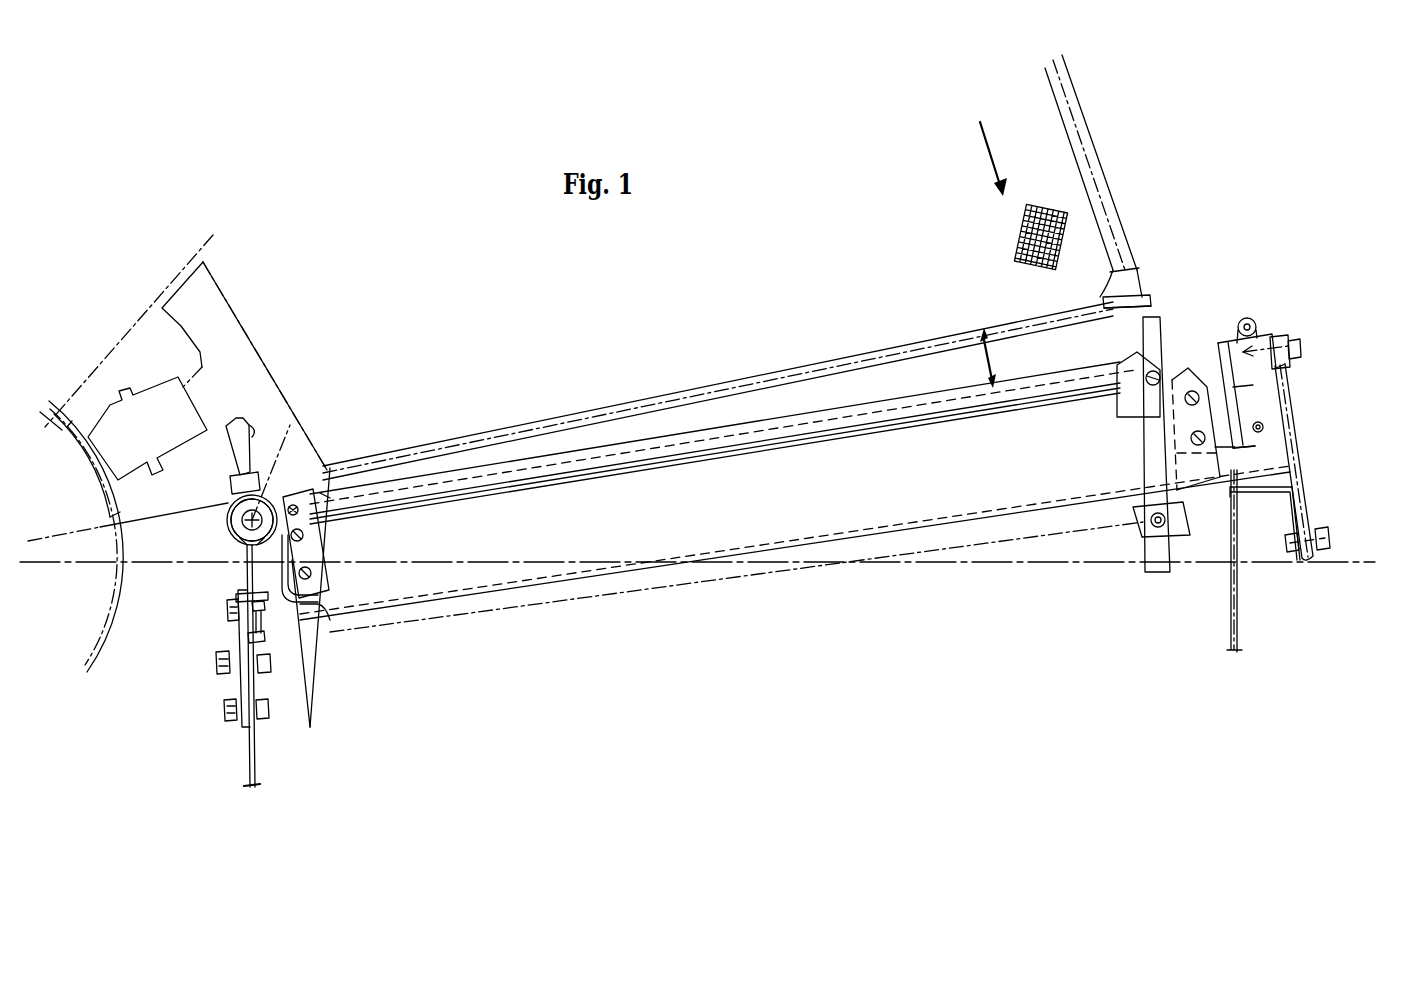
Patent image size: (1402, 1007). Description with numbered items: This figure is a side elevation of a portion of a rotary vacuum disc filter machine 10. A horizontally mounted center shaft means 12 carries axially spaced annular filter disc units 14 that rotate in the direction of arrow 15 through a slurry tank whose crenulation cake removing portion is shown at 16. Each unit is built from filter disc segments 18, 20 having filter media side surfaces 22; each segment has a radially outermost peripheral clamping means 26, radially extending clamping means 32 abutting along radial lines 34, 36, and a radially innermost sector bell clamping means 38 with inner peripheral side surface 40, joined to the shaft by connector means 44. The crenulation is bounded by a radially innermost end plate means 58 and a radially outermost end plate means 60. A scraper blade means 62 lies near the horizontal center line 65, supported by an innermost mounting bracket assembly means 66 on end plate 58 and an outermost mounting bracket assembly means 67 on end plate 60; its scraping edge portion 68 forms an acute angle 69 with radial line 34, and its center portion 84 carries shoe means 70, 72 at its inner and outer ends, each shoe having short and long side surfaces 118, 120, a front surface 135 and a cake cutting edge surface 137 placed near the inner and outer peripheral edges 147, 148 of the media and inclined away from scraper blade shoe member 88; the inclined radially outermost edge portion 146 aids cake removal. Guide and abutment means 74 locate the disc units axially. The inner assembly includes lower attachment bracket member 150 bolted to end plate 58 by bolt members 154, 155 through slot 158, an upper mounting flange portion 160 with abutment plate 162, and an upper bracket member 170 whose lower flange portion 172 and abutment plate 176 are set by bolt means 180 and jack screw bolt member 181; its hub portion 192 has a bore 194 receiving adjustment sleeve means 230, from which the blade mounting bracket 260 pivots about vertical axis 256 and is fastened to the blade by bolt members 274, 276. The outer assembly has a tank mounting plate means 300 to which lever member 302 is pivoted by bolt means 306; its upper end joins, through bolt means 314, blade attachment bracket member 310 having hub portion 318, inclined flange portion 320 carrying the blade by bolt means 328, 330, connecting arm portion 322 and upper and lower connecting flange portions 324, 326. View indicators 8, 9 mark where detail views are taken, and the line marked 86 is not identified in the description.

The view 8 direction 8 is at (1318, 430).
The section line 9- 9 is at (293, 530).
The rotary vacuum disc filter machine 10 is at (102, 384).
The center shaft means 12 is at (85, 640).
The filter disc units 14 is at (1139, 288).
The arrow 15 is at (988, 160).
The crenulation cake removing portion of the tank means 16 is at (262, 773).
The filter disc segment 18 is at (1122, 185).
The filter disc segment 20 is at (1153, 313).
The filter media side surface 22 is at (1014, 250).
The radially outermost peripheral clamping means 26 is at (1109, 145).
The radially extending clamping means 32 is at (838, 354).
The radial line 34 is at (724, 382).
The radial line 36 is at (215, 238).
The sector bell connecting and filter material clamping means 38 is at (232, 299).
The inner peripheral side surface 40 is at (235, 362).
The connector means 44 is at (140, 400).
The radially innermost end plate means 58 is at (246, 770).
The radially outermost end plate means 60 is at (1238, 578).
The scraper blade means 62 is at (782, 540).
The horizontal center line 65 is at (965, 564).
The radially innermost mounting bracket assembly means 66 is at (232, 594).
The radially outermost mounting bracket assembly means 67 is at (1298, 330).
The scraping edge portion 68 is at (886, 394).
The acute angle 69 is at (985, 362).
The cake scraping and scraper blade supporting shoe means 70 is at (340, 500).
The cake scraping and scraper blade supporting shoe means 72 is at (1146, 380).
The filter disc unit guide and abutment means 74 is at (1140, 540).
The blade center portion 84 is at (832, 540).
The lower beam upper edge 86 is at (560, 582).
The scraper blade shoe member 88 is at (845, 425).
The short side surface 118 is at (1162, 365).
The long side surface 120 is at (1133, 356).
The front surface 135 is at (278, 470).
The cake cutting edge surface 137 is at (318, 468).
The radially outermost edge portion 146 is at (1196, 384).
The radially inner peripheral edge 147 is at (284, 395).
The radially outer peripheral edge 148 is at (1138, 270).
The end cake slot lower attachment bracket member 150 is at (236, 640).
The bolt member 154 is at (218, 670).
The bolt member 155 is at (226, 711).
The slot 158 is at (270, 699).
The upper mounting flange portion 160 is at (227, 607).
The abutment plate 162 is at (266, 668).
The upper attachment bracket member 170 is at (236, 560).
The lower attachment flange portion 172 is at (308, 593).
The abutment plate 176 is at (313, 636).
The bolt means 180 is at (236, 627).
The bolt member 181 is at (262, 642).
The hub portion 192 is at (232, 528).
The central axially extending bore 194 is at (230, 516).
The adjustment sleeve means 230 is at (240, 541).
The pivotal axis 256 is at (228, 440).
The scraper blade mounting bracket 260 is at (231, 486).
The bolt member 274 is at (305, 540).
The bolt member 276 is at (313, 573).
The tank mounting plate means 300 is at (1288, 492).
The lever member 302 is at (1310, 446).
The bolt means 306 is at (1332, 540).
The blade attachment bracket member 310 is at (1250, 444).
The bolt means 314 is at (1306, 344).
The hub portion 318 is at (1279, 332).
The inclined blade mounting flange portion 320 is at (1222, 447).
The connecting arm portion 322 is at (1255, 385).
The upper connecting flange portion 324 is at (1250, 318).
The lower connecting flange portion 326 is at (1256, 407).
The bolt means 328 is at (1185, 405).
The bolt means 330 is at (1190, 442).